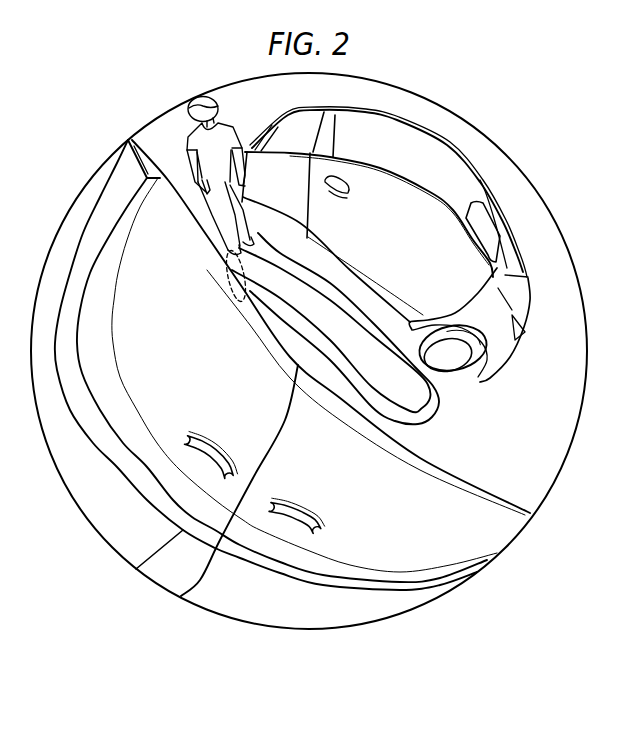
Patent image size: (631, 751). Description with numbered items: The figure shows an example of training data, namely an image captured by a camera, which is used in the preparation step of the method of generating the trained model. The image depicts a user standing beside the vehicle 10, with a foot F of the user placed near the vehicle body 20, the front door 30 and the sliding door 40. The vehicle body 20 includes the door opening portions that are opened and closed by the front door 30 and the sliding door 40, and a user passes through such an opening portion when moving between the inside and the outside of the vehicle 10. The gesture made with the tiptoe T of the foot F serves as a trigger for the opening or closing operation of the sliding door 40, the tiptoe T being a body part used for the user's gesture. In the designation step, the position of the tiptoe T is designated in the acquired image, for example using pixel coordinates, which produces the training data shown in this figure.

The vehicle 10 is at (387, 288).
The vehicle body 20 is at (502, 488).
The front door 30 is at (401, 507).
The sliding door 40 is at (202, 359).
The foot F is at (236, 250).
The tiptoe T is at (226, 296).